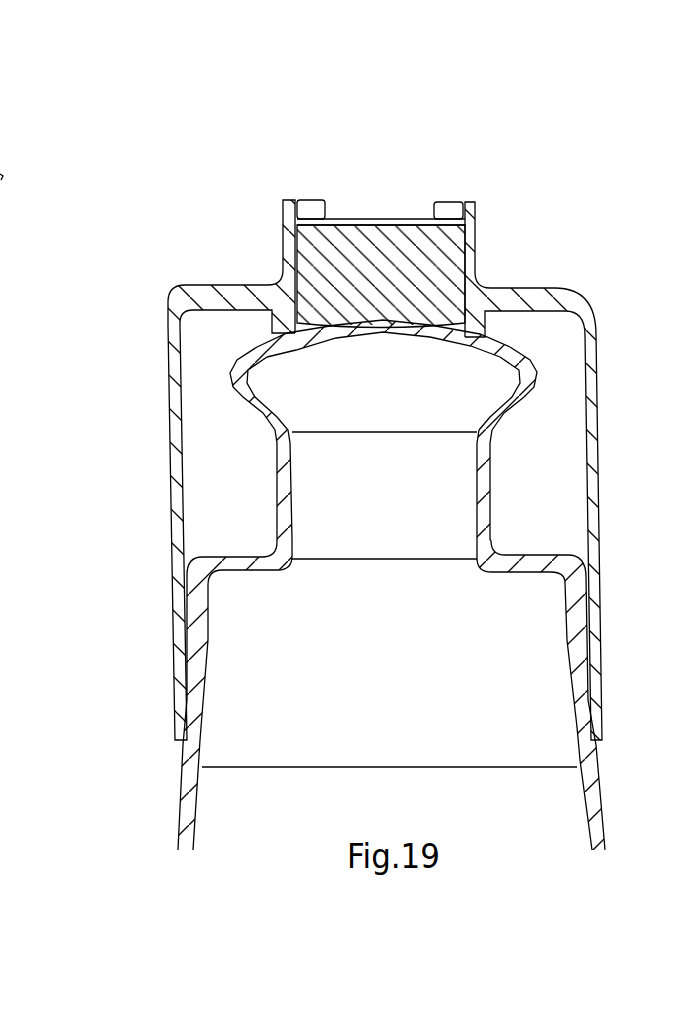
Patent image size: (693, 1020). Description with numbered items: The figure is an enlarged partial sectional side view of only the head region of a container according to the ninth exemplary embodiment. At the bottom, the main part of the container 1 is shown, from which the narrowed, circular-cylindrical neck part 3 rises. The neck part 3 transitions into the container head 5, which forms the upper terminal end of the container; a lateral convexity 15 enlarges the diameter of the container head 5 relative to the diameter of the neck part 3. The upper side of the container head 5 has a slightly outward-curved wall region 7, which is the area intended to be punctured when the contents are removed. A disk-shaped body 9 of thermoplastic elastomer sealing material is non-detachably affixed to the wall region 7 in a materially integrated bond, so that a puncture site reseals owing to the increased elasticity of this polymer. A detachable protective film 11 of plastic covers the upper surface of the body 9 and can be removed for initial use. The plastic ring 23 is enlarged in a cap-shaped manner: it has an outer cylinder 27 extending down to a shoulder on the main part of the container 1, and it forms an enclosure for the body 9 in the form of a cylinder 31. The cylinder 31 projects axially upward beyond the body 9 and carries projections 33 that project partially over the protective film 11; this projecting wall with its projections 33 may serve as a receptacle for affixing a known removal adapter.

The container 1 is at (0, 833).
The neck part 3 is at (490, 475).
The container head 5 is at (490, 342).
The wall region 7 is at (362, 340).
The disk-shaped body 9 is at (283, 210).
The protective film 11 is at (380, 218).
The lateral convexity 15 is at (533, 371).
The plastic ring 23 is at (555, 290).
The outer cylinder 27 is at (0, 512).
The cylinder 31 is at (286, 253).
The projections 33 is at (306, 200).